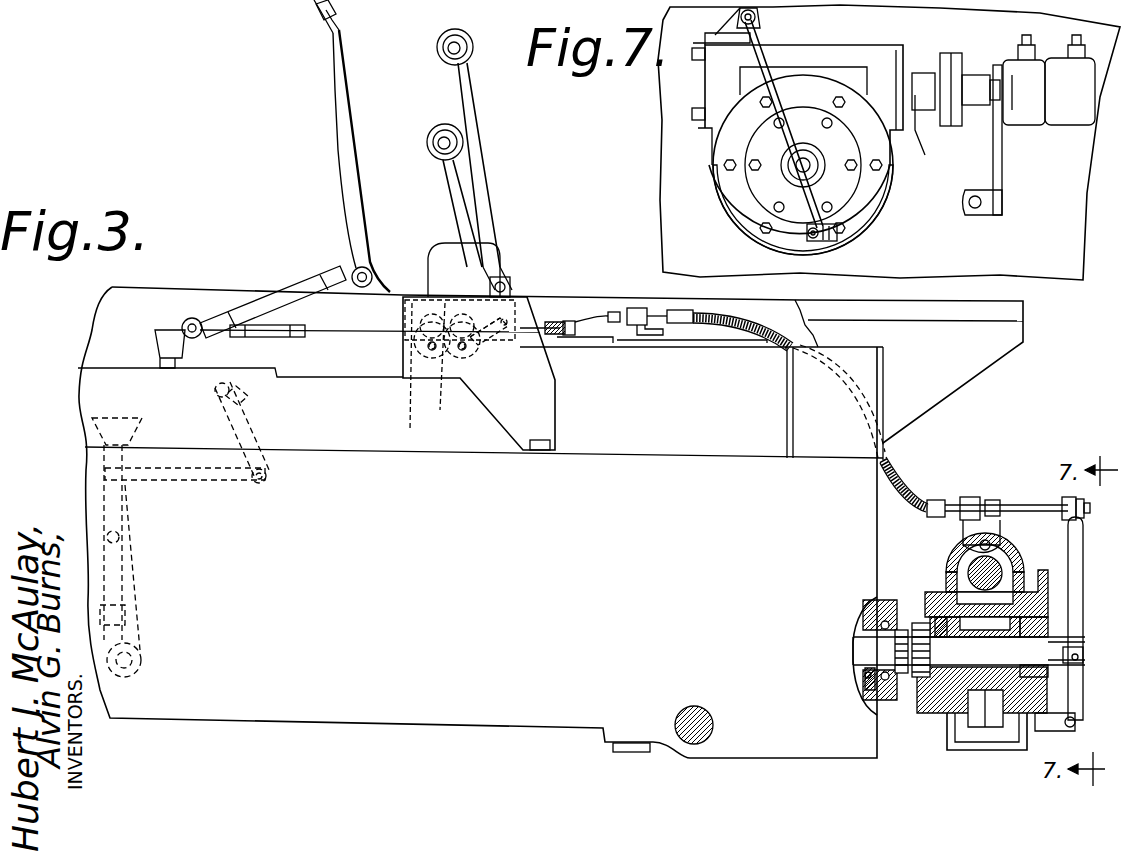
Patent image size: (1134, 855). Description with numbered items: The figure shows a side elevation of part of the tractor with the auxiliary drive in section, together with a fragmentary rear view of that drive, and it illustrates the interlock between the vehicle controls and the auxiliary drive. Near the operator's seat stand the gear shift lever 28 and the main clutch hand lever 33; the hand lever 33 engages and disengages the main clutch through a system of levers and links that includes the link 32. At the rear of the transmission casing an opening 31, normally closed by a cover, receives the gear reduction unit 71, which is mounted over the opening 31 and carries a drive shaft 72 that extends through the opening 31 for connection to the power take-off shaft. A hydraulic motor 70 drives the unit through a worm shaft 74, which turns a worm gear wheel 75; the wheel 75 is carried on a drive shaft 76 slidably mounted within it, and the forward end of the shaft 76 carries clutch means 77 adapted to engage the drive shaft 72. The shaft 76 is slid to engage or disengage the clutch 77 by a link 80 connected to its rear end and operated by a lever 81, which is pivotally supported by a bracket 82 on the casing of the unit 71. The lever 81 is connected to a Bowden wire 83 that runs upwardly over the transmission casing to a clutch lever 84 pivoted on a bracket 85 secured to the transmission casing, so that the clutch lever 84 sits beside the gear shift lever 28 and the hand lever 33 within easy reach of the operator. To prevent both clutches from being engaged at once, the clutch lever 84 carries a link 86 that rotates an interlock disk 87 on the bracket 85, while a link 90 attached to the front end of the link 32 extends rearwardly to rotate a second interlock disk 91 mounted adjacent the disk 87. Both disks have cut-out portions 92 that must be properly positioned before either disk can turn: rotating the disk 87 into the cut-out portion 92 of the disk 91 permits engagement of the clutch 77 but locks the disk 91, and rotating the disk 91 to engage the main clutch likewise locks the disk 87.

In FIG. 3, the gear shift lever 28 is at (440, 130).
In FIG. 3, the opening 31 is at (868, 675).
In FIG. 3, the link 32 is at (258, 300).
In FIG. 3, the hand lever 33 is at (350, 132).
In FIG. 7, the hydraulic motor 70 is at (1078, 112).
In FIG. 3, the gear reduction unit 71 is at (1040, 590).
In FIG. 7, the gear reduction unit 71 is at (705, 130).
In FIG. 3, the drive shaft 72 is at (862, 647).
In FIG. 3, the worm shaft 74 is at (975, 560).
In FIG. 7, the worm shaft 74 is at (956, 110).
In FIG. 3, the worm gear wheel 75 is at (975, 722).
In FIG. 3, the drive shaft 76 is at (940, 617).
In FIG. 3, the clutch means 77 is at (898, 605).
In FIG. 3, the link 80 is at (1060, 650).
In FIG. 7, the link 80 is at (795, 178).
In FIG. 3, the lever 81 is at (1075, 677).
In FIG. 7, the lever 81 is at (790, 230).
In FIG. 3, the bracket 82 is at (1060, 730).
In FIG. 7, the bracket 82 is at (825, 240).
In FIG. 3, the Bowden wire 83 is at (907, 482).
In FIG. 7, the Bowden wire 83 is at (740, 17).
In FIG. 3, the clutch lever 84 is at (483, 190).
In FIG. 3, the bracket 85 is at (540, 378).
In FIG. 3, the link 86 is at (487, 318).
In FIG. 3, the interlock disk 87 is at (480, 360).
In FIG. 3, the link 90 is at (348, 333).
In FIG. 3, the second interlock disk 91 is at (430, 360).
In FIG. 3, the cut-out portions 92 is at (460, 360).